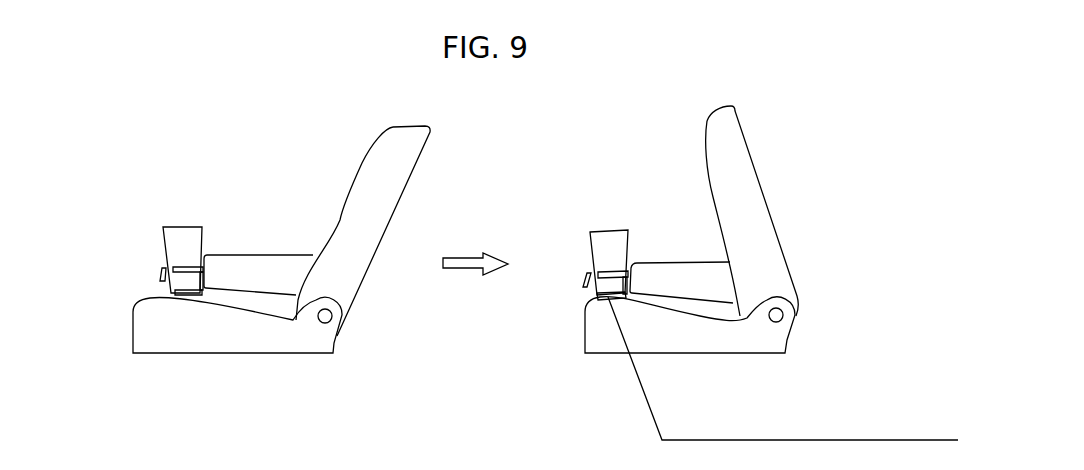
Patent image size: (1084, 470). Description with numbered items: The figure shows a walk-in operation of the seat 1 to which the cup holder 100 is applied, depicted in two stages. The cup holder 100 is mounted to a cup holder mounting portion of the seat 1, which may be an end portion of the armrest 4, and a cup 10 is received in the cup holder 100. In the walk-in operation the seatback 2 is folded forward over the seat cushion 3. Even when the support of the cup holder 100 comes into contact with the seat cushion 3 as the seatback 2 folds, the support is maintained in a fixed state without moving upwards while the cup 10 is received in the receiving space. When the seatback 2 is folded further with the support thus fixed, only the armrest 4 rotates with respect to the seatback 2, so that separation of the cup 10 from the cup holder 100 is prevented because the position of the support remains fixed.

The seat 1 is at (500, 266).
The seatback 2 is at (372, 172).
The seat cushion 3 is at (147, 328).
The armrest 4 is at (262, 262).
The cup 10 is at (181, 226).
The cup holder 100 is at (152, 267).